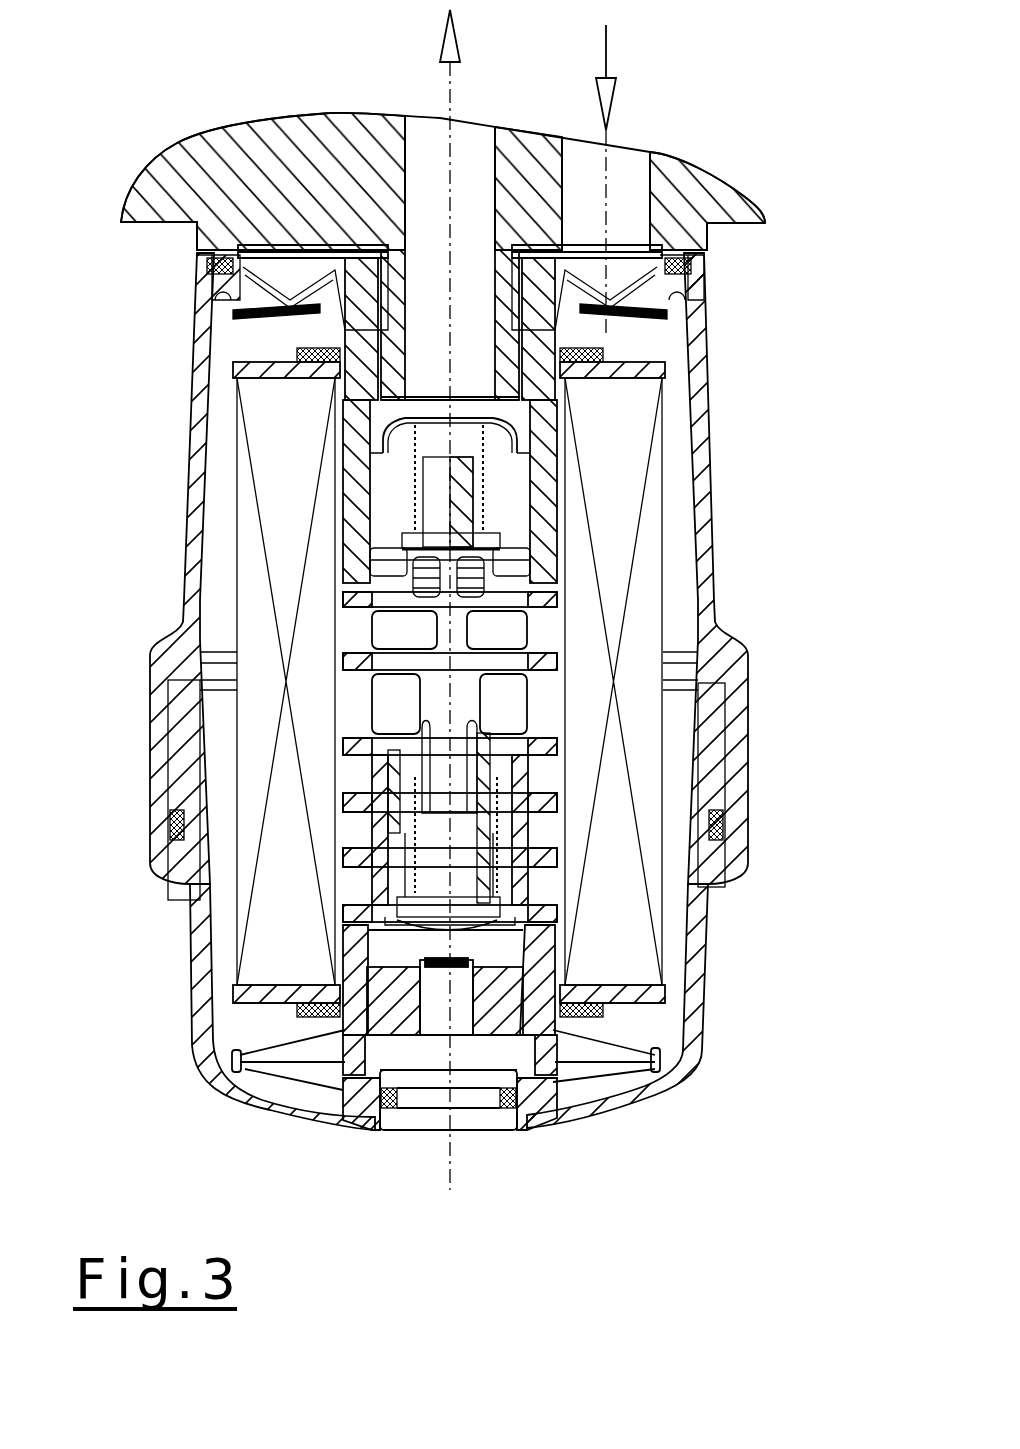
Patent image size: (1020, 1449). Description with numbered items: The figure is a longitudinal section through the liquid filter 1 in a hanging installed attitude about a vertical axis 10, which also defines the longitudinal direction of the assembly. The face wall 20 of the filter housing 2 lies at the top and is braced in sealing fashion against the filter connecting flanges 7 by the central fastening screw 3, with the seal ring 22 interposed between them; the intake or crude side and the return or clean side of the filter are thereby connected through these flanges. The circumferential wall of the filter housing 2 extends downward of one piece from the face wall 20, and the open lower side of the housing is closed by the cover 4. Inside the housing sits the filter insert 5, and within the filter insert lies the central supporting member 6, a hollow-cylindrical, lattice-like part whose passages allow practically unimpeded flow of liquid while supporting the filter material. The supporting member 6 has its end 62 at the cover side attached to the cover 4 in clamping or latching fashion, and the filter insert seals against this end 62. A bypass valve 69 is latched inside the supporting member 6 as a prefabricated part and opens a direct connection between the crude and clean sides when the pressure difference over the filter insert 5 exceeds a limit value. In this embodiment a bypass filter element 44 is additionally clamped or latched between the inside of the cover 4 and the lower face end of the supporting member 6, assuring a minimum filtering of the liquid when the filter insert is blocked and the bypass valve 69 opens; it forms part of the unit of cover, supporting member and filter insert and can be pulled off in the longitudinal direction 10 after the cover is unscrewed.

The liquid filter 1 is at (445, 601).
The filter housing 2 is at (715, 412).
The central fastening screw 3 is at (560, 385).
The cover 4 is at (705, 955).
The filter insert 5 is at (672, 560).
The supporting member 6 is at (548, 693).
The filter connecting flanges 7 is at (172, 247).
The vertical axis 10 is at (453, 1160).
The face wall 20 is at (245, 275).
The seal ring 22 is at (690, 252).
The bypass filter element 44 is at (262, 1032).
The end at the cover side 62 is at (262, 978).
The bypass valve 69 is at (390, 917).